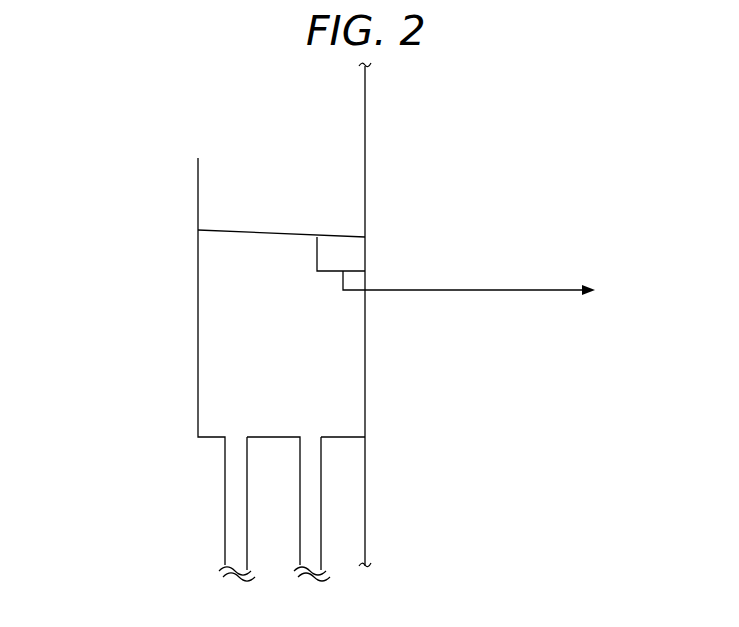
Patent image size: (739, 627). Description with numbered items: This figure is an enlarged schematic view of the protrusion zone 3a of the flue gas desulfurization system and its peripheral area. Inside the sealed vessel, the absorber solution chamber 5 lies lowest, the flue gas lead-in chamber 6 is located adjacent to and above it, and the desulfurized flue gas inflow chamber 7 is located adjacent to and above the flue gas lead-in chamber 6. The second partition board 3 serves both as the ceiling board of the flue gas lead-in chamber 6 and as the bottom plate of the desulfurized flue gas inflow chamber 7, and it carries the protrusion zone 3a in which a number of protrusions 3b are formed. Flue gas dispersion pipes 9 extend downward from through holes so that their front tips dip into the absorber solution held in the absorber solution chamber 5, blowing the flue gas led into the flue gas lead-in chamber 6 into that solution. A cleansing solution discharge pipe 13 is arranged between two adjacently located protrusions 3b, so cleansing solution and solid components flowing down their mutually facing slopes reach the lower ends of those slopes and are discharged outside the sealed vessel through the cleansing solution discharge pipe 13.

The second partition board 3 is at (200, 228).
The protrusion zone 3a is at (334, 201).
The protrusions 3b is at (353, 250).
The absorber solution chamber 5 is at (347, 460).
The flue gas lead-in chamber 6 is at (322, 370).
The desulfurized flue gas inflow chamber 7 is at (345, 128).
The flue gas dispersion pipes 9 is at (312, 518).
The cleansing solution discharge pipe 13 is at (555, 290).